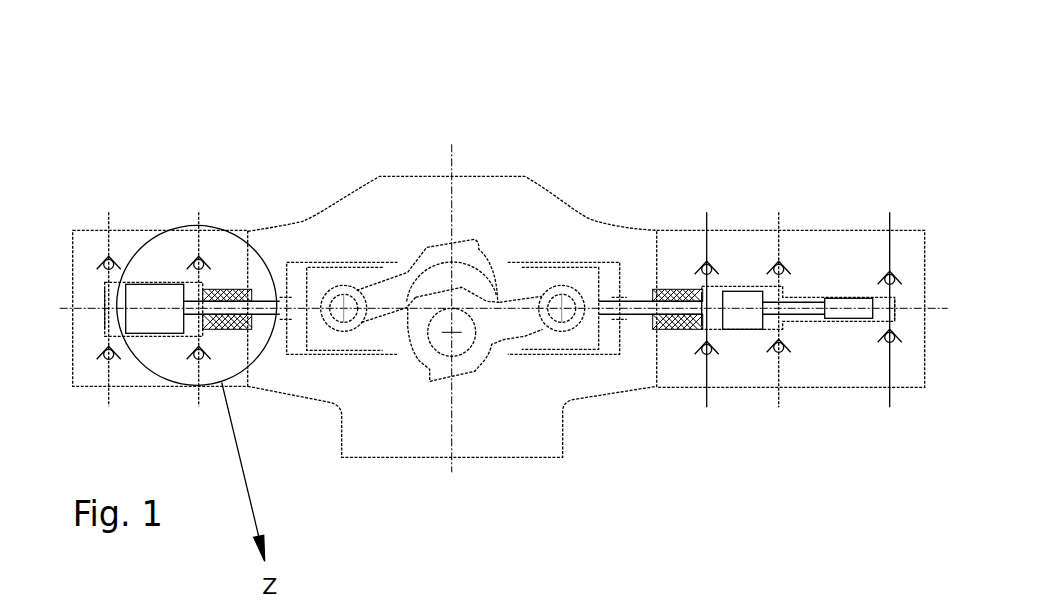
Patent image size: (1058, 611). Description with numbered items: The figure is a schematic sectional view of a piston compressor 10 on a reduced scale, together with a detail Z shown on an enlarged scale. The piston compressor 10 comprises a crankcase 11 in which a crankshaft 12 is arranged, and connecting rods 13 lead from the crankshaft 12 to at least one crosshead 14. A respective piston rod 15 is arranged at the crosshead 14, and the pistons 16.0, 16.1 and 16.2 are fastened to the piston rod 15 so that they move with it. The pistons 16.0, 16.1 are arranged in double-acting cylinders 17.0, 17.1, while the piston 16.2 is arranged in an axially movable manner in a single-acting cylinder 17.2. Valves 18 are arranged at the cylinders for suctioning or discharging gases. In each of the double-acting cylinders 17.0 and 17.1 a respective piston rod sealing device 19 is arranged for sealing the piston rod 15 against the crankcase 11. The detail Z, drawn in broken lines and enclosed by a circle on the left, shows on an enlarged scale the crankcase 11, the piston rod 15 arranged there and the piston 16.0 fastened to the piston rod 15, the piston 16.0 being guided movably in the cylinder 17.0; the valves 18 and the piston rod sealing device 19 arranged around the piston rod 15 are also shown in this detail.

The piston compressor 10 is at (458, 145).
The crankcase 11 is at (486, 177).
The crankshaft 12 is at (440, 272).
The connecting rods 13 is at (393, 288).
The crosshead 14 is at (317, 277).
The piston rod 15 is at (267, 306).
The piston 16.0 is at (155, 283).
The piston 16.1 is at (743, 292).
The piston 16.2 is at (848, 299).
The double-acting cylinder 17.0 is at (155, 337).
The double-acting cylinder 17.1 is at (743, 330).
The single-acting cylinder 17.2 is at (848, 319).
The valves 18 is at (105, 262).
The piston rod sealing device 19 is at (230, 288).